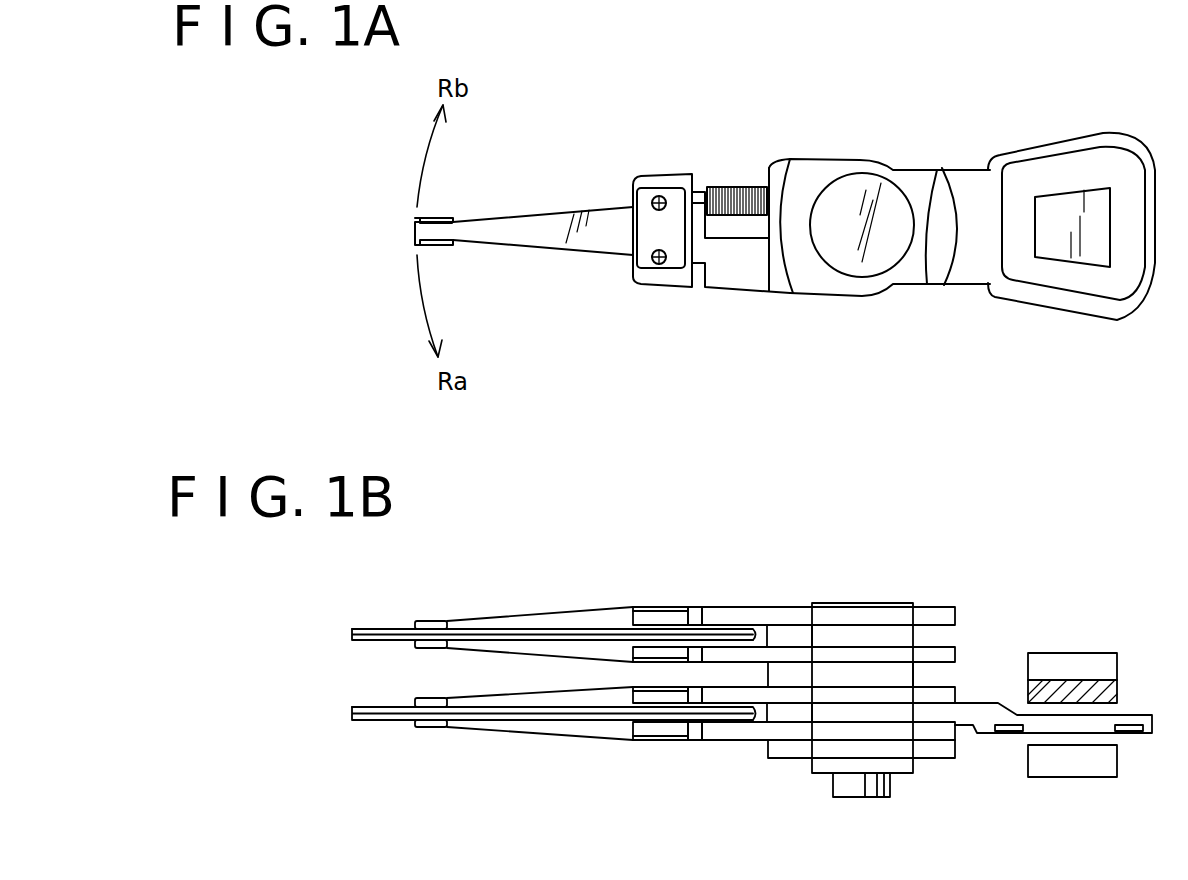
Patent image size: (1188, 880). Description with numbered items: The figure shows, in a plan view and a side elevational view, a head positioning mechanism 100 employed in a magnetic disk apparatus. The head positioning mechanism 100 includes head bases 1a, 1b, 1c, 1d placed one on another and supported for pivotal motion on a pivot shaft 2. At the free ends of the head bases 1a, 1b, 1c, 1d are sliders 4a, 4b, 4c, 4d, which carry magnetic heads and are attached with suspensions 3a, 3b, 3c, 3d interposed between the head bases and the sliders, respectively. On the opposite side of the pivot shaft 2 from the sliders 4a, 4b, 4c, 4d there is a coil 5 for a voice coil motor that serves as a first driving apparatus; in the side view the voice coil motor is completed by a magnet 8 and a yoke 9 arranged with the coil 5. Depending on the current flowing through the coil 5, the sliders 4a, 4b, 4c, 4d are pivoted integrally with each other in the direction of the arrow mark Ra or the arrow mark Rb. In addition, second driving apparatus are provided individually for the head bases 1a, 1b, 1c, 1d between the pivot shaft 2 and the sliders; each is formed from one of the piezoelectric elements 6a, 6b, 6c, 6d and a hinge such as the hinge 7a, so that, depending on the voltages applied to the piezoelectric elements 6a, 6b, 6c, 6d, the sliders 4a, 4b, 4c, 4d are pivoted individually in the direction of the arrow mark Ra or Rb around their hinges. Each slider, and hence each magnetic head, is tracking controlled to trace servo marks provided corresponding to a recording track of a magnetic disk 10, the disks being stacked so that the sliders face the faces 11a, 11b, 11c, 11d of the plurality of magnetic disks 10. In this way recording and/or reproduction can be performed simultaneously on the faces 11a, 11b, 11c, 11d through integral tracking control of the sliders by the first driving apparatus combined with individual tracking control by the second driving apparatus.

In FIG. 1A, the head base 1a is at (838, 287).
In FIG. 1B, the head base 1a is at (937, 606).
In FIG. 1B, the head base 1b is at (957, 650).
In FIG. 1B, the head base 1c is at (958, 695).
In FIG. 1B, the head base 1d is at (943, 753).
In FIG. 1A, the pivot shaft 2 is at (907, 187).
In FIG. 1B, the pivot shaft 2 is at (862, 603).
In FIG. 1A, the suspension 3a is at (533, 212).
In FIG. 1B, the suspension 3a is at (568, 615).
In FIG. 1B, the suspension 3b is at (580, 658).
In FIG. 1B, the suspension 3c is at (597, 673).
In FIG. 1B, the suspension 3d is at (610, 738).
In FIG. 1A, the slider 4a is at (442, 247).
In FIG. 1B, the slider 4a is at (430, 622).
In FIG. 1B, the slider 4b is at (430, 648).
In FIG. 1B, the slider 4c is at (437, 698).
In FIG. 1B, the slider 4d is at (430, 727).
In FIG. 1A, the coil 5 is at (1063, 173).
In FIG. 1B, the coil 5 is at (1133, 735).
In FIG. 1A, the piezoelectric element 6a is at (742, 187).
In FIG. 1B, the piezoelectric element 6a is at (697, 610).
In FIG. 1B, the piezoelectric element 6b is at (702, 653).
In FIG. 1B, the piezoelectric element 6c is at (700, 693).
In FIG. 1B, the piezoelectric element 6d is at (695, 740).
In FIG. 1A, the hinge 7a is at (700, 268).
In FIG. 1B, the magnet 8 is at (1117, 690).
In FIG. 1B, the yoke 9 is at (1082, 652).
In FIG. 1B, the magnetic disk 10 is at (519, 673).
In FIG. 1B, the face 11a is at (378, 628).
In FIG. 1B, the face 11b is at (373, 641).
In FIG. 1B, the face 11c is at (378, 708).
In FIG. 1B, the face 11d is at (370, 720).
In FIG. 1A, the head positioning mechanism 100 is at (749, 333).